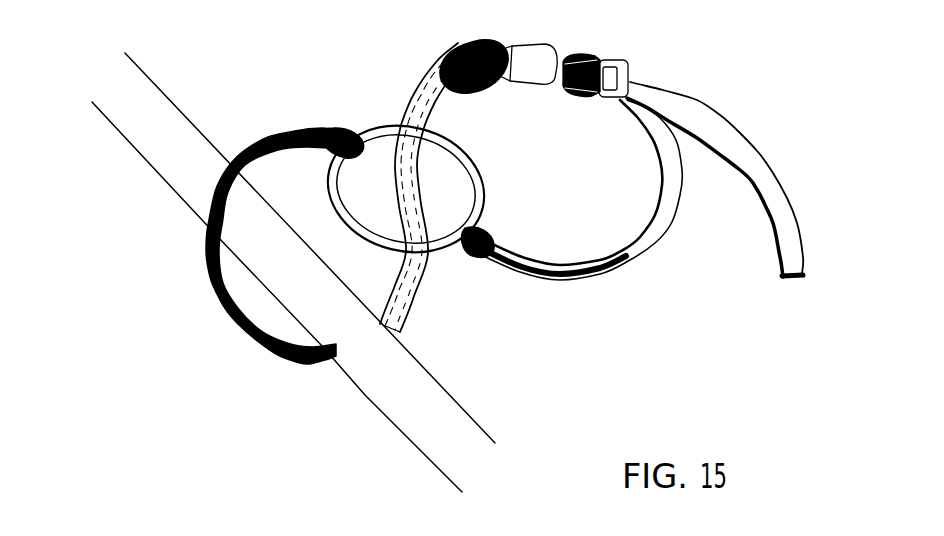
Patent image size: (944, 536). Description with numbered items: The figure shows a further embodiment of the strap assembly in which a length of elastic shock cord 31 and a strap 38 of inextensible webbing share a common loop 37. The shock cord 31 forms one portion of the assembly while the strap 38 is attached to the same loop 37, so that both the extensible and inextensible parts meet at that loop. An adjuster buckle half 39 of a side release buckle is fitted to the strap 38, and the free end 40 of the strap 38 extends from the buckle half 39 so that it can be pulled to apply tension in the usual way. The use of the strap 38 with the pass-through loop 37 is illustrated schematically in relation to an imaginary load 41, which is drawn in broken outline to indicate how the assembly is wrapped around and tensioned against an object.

The shock cord 31 is at (208, 279).
The loop 37 is at (363, 137).
The strap 38 is at (616, 271).
The adjuster buckle half 39 is at (615, 67).
The free end 40 is at (782, 205).
The imaginary load 41 is at (391, 370).